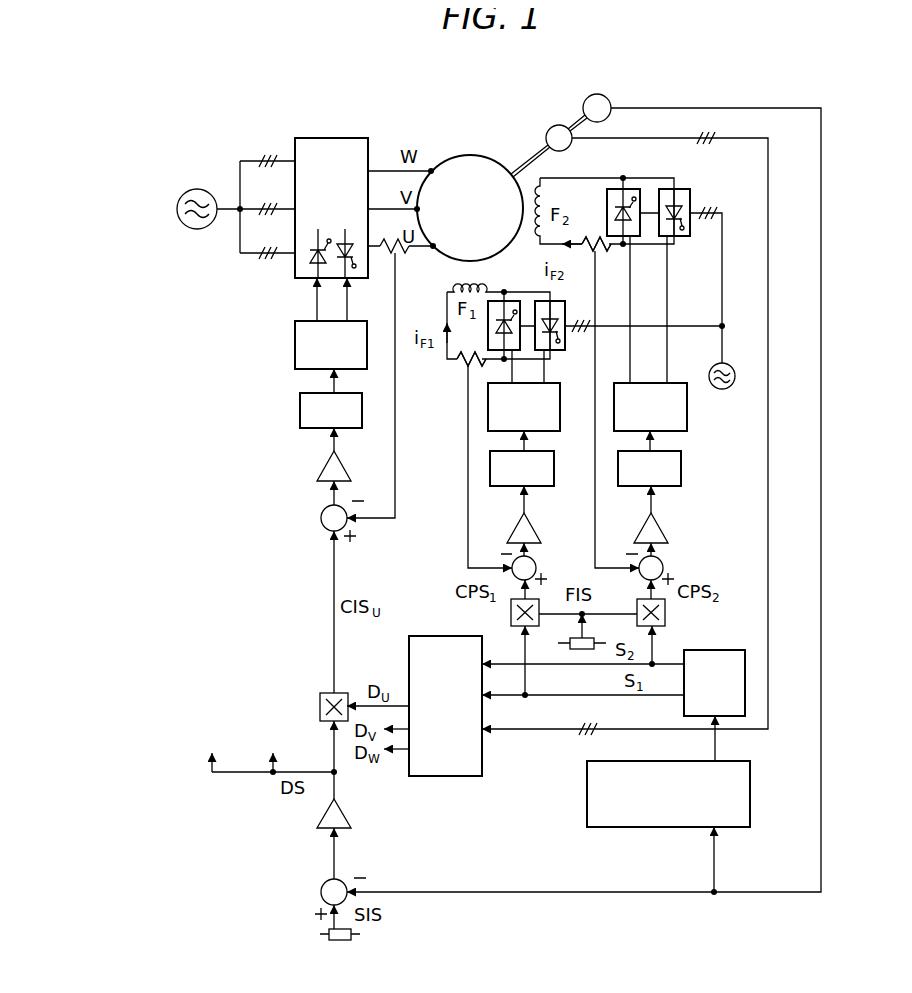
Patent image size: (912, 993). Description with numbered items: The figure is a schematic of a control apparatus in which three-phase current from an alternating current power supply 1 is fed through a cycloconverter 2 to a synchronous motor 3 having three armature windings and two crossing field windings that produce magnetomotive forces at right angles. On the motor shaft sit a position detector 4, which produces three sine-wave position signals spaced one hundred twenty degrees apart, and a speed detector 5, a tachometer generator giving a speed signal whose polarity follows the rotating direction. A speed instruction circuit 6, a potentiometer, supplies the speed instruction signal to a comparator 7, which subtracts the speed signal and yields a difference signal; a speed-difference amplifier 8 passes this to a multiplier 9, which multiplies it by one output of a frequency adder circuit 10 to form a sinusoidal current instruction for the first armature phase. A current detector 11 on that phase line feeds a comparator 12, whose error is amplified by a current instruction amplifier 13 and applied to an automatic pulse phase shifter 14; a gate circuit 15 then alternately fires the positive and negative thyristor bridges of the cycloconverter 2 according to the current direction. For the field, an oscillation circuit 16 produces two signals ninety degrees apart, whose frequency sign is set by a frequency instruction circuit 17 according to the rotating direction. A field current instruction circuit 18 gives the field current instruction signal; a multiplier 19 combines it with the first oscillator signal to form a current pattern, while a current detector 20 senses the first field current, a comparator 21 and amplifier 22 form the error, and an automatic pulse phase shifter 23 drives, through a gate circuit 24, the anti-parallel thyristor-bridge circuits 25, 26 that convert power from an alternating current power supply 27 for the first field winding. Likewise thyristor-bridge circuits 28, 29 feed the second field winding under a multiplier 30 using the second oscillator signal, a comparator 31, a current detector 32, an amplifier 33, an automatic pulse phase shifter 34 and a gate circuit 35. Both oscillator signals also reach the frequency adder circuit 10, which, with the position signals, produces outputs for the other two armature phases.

The alternating current power supply 1 is at (195, 188).
The cycloconverter 2 is at (320, 137).
The synchronous motor 3 is at (462, 157).
The position detector 4 is at (548, 128).
The speed detector 5 is at (597, 93).
The speed instruction circuit 6 is at (338, 940).
The comparator 7 is at (319, 887).
The speed-difference amplifier 8 is at (346, 814).
The multiplier 9 is at (317, 698).
The frequency adder circuit 10 is at (425, 775).
The current detector 11 is at (395, 250).
The comparator 12 is at (319, 516).
The current instruction amplifier 13 is at (318, 468).
The automatic pulse phase shifter 14 is at (298, 410).
The gate circuit 15 is at (293, 345).
The oscillation circuit 16 is at (735, 715).
The frequency instruction circuit 17 is at (748, 782).
The field current instruction circuit 18 is at (572, 648).
The multiplier 19 is at (509, 612).
The current detector 20 is at (458, 365).
The comparator 21 is at (533, 560).
The amplifier 22 is at (538, 530).
The automatic pulse phase shifter 23 is at (548, 485).
The gate circuit 24 is at (558, 425).
The thyristor-bridge circuit 25 is at (492, 300).
The thyristor-bridge circuit 26 is at (562, 344).
The alternating current power supply 27 is at (729, 386).
The thyristor-bridge circuit 28 is at (630, 188).
The thyristor-bridge circuit 29 is at (682, 188).
The multiplier 30 is at (663, 612).
The comparator 31 is at (659, 560).
The current detector 32 is at (605, 246).
The amplifier 33 is at (662, 530).
The automatic pulse phase shifter 34 is at (679, 462).
The gate circuit 35 is at (685, 418).